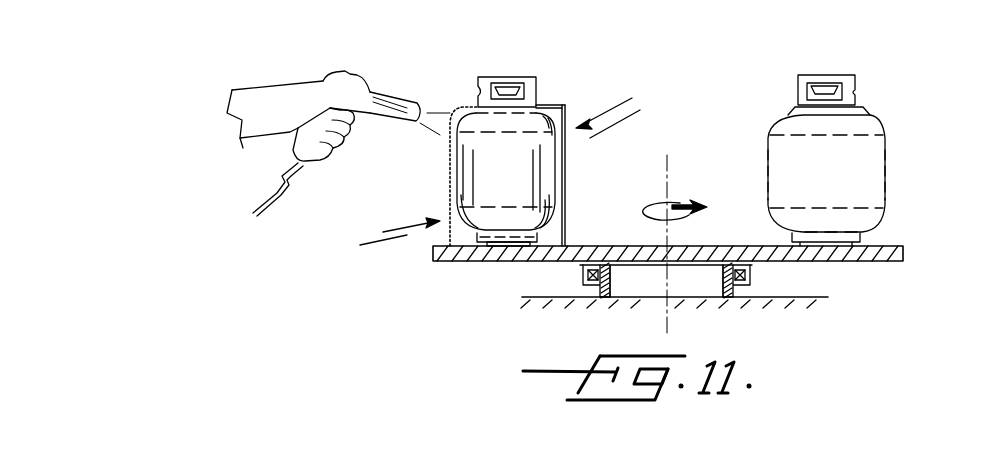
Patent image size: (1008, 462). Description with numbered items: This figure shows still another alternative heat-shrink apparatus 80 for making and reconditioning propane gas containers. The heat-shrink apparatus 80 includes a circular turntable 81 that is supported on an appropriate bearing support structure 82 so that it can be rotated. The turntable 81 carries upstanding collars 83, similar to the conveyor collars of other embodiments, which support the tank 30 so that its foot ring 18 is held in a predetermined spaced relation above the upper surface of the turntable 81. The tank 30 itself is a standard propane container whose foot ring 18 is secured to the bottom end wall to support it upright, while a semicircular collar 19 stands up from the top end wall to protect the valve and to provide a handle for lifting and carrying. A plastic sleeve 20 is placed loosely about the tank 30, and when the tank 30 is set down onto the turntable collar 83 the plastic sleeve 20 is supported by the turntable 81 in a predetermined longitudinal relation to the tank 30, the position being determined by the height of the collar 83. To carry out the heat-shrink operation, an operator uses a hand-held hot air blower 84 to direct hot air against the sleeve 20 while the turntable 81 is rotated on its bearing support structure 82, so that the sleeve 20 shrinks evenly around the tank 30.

The foot ring 18 is at (536, 238).
The collar 19 is at (533, 80).
The plastic sleeve 20 is at (572, 104).
The tank 30 is at (474, 162).
The heat-shrink apparatus 80 is at (692, 98).
The turntable 81 is at (710, 247).
The bearing support structure 82 is at (752, 282).
The collar 83 is at (498, 243).
The hand-held hot air blower 84 is at (392, 90).